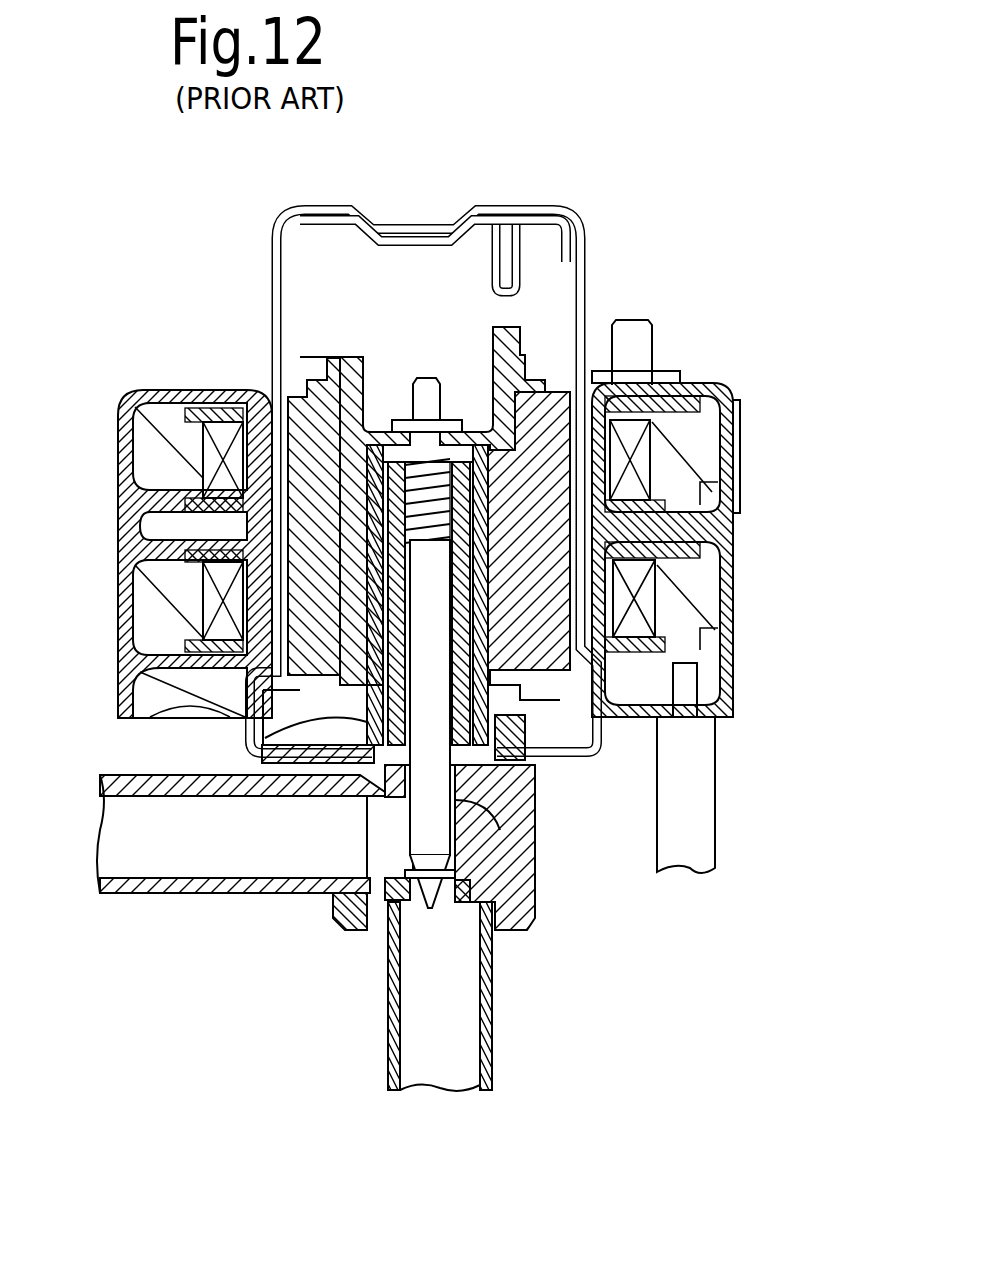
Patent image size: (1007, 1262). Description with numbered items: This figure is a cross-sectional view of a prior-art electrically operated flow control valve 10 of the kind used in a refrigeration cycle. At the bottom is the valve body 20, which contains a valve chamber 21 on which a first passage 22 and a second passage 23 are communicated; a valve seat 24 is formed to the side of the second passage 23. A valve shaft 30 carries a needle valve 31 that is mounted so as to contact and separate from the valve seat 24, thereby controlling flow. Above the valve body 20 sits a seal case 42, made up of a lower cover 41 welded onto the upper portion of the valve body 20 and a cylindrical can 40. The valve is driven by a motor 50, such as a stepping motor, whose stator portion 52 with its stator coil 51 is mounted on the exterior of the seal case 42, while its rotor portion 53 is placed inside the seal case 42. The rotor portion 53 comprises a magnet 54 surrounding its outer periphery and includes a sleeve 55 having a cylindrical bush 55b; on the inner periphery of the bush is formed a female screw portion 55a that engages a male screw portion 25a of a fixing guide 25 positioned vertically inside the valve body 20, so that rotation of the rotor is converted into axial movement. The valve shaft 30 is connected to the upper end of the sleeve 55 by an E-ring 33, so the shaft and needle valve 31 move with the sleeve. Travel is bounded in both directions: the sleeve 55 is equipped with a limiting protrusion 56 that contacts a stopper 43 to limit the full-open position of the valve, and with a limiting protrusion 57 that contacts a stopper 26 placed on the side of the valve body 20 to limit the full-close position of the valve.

The electrically operated flow control valve 10 is at (650, 185).
The valve body 20 is at (515, 913).
The valve chamber 21 is at (392, 820).
The first passage 22 is at (210, 883).
The second passage 23 is at (393, 1045).
The valve seat 24 is at (433, 908).
The fixing guide 25 is at (395, 503).
The male screw portion 25a is at (248, 755).
The stopper 26 is at (528, 812).
The valve shaft 30 is at (540, 855).
The needle valve 31 is at (363, 930).
The E-ring 33 is at (394, 405).
The cylindrical can 40 is at (272, 228).
The lower cover 41 is at (286, 766).
The seal case 42 is at (252, 325).
The stopper 43 is at (498, 253).
The motor 50 is at (778, 485).
The stator coil 51 is at (640, 457).
The stator portion 52 is at (727, 640).
The rotor portion 53 is at (432, 345).
The magnet 54 is at (302, 405).
The sleeve 55 is at (340, 370).
The female screw portion 55a is at (390, 590).
The cylindrical bush 55b is at (375, 548).
The limiting protrusion 56 is at (505, 325).
The limiting protrusion 57 is at (520, 750).